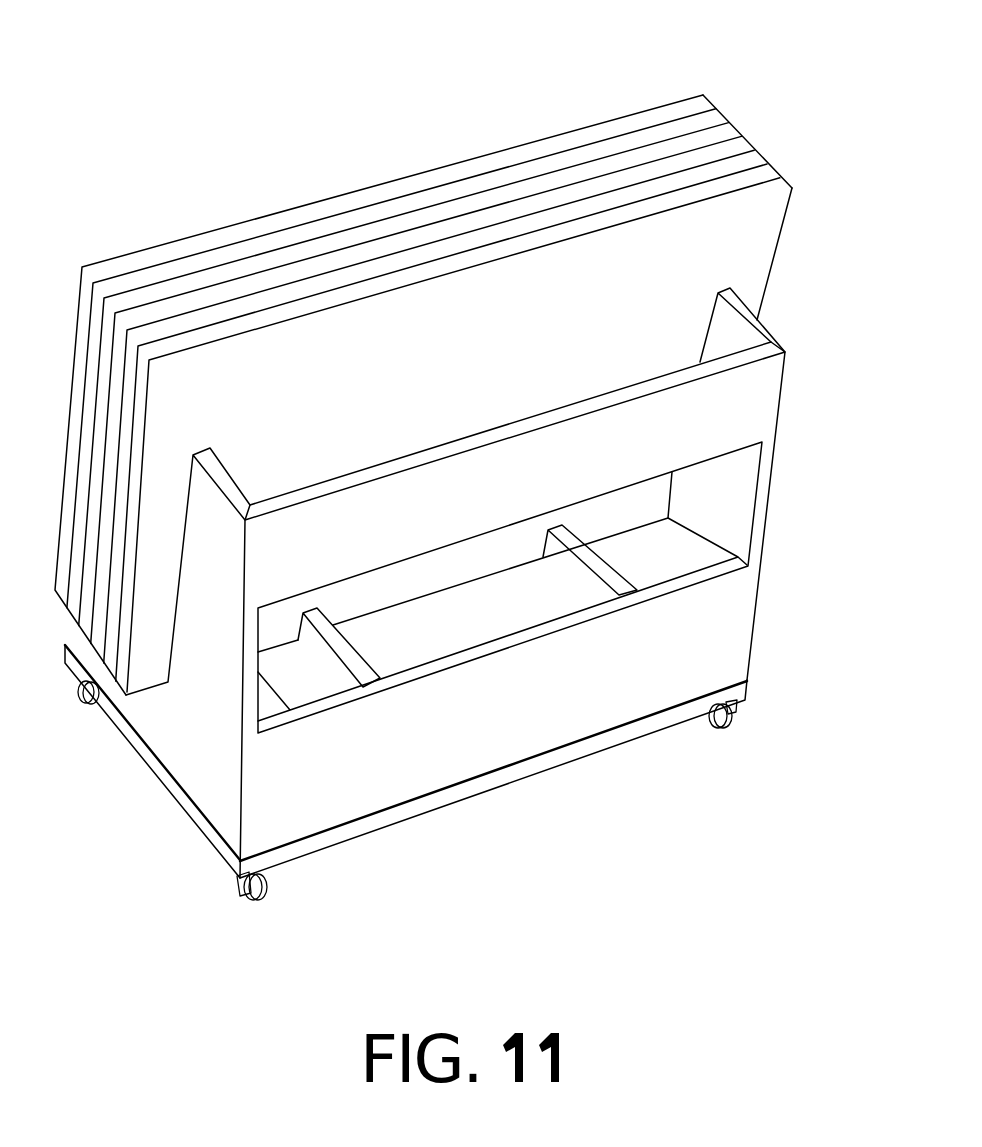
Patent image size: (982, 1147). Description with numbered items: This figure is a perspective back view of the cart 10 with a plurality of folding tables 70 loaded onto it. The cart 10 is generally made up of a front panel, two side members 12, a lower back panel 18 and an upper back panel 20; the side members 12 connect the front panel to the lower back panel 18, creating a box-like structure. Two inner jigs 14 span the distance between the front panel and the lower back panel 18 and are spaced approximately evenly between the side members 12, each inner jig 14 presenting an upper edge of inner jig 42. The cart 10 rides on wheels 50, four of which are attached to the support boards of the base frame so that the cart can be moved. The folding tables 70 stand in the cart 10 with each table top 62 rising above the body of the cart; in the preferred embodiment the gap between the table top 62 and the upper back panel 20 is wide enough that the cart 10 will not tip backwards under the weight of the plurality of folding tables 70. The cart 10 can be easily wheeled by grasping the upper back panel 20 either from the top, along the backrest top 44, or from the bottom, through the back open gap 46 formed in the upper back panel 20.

The cart 10 is at (486, 613).
The side member 12 is at (178, 725).
The inner jig 14 is at (305, 672).
The lower back panel 18 is at (600, 677).
The upper back panel 20 is at (705, 430).
The upper edge of inner jig 42 is at (613, 585).
The backrest top 44 is at (768, 347).
The back open gap 46 is at (634, 504).
The wheel 50 is at (262, 898).
The table top 62 is at (656, 307).
The folding table 70 is at (744, 105).